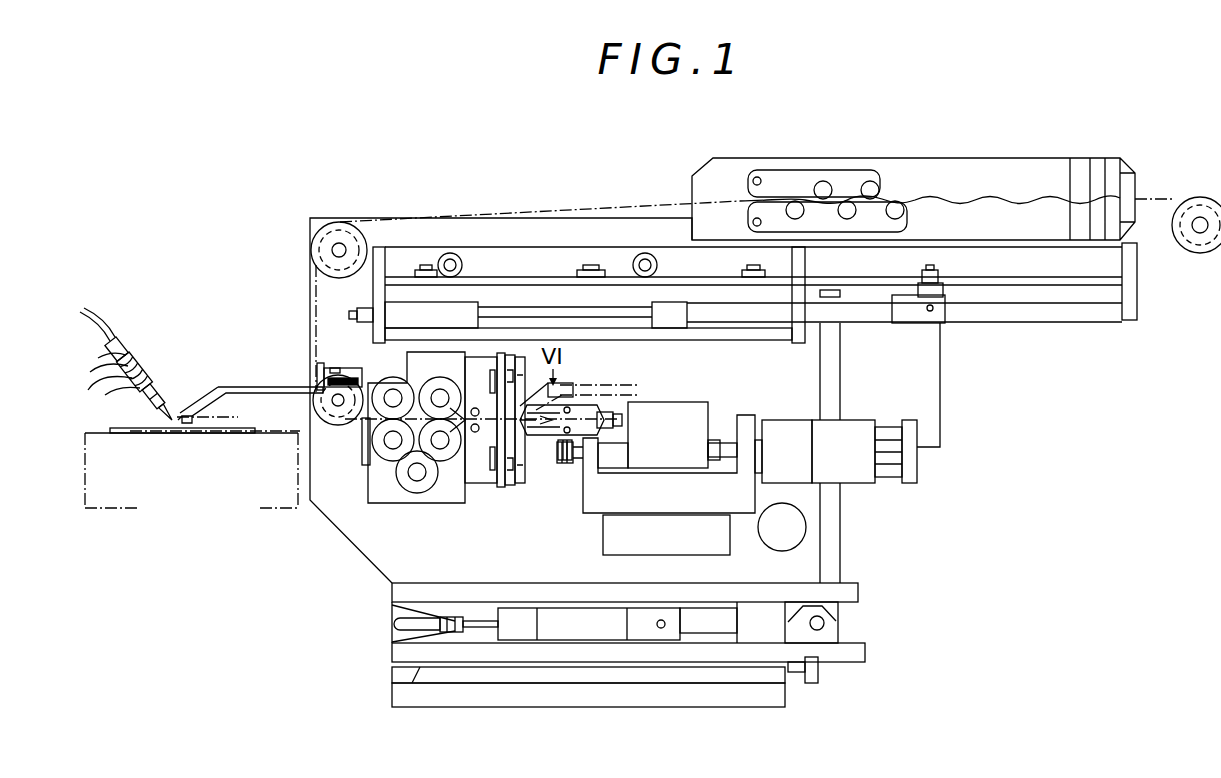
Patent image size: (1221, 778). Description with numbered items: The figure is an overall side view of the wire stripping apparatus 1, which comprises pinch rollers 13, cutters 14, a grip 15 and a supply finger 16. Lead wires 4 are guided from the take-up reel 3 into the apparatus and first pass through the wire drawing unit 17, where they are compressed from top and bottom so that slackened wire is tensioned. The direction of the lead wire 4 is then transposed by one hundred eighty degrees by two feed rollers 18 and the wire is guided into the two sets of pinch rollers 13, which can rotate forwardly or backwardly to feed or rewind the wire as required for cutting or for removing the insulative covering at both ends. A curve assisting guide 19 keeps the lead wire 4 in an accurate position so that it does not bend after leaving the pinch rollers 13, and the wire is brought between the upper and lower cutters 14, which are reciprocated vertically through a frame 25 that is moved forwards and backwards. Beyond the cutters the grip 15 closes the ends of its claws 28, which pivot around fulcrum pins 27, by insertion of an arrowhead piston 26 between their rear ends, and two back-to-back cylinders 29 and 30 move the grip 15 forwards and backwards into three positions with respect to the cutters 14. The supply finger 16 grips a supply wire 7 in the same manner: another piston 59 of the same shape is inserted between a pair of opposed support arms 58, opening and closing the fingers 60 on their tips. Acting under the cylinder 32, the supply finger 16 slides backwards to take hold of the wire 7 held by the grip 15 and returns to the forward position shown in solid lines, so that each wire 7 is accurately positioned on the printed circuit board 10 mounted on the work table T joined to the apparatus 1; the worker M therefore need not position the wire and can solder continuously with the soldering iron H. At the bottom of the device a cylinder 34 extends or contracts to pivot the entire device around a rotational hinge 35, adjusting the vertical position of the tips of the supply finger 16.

The wire stripping apparatus 1 is at (548, 188).
The take-up reel 3 is at (1193, 198).
The lead wire 4 is at (986, 168).
The supply wire 7 is at (220, 433).
The printed circuit board 10 is at (137, 428).
The pinch rollers 13 is at (444, 464).
The cutters 14 is at (500, 487).
The grip 15 is at (532, 383).
The supply finger 16 is at (592, 380).
The wire drawing unit 17 is at (832, 168).
The feed rollers 18 is at (336, 227).
The curve assisting guide 19 is at (362, 445).
The frame 25 is at (513, 487).
The arrowhead piston 26 is at (630, 404).
The fulcrum pins 27 is at (570, 400).
The claws 28 is at (543, 437).
The cylinder 29 is at (792, 432).
The cylinder 30 is at (862, 432).
The cylinder 32 is at (880, 320).
The cylinder 34 is at (583, 628).
The rotational hinge 35 is at (826, 624).
The support arms 58 is at (282, 388).
The piston 59 is at (330, 368).
The fingers 60 is at (193, 408).
The soldering iron H is at (112, 343).
The worker M is at (100, 360).
The work table T is at (135, 480).